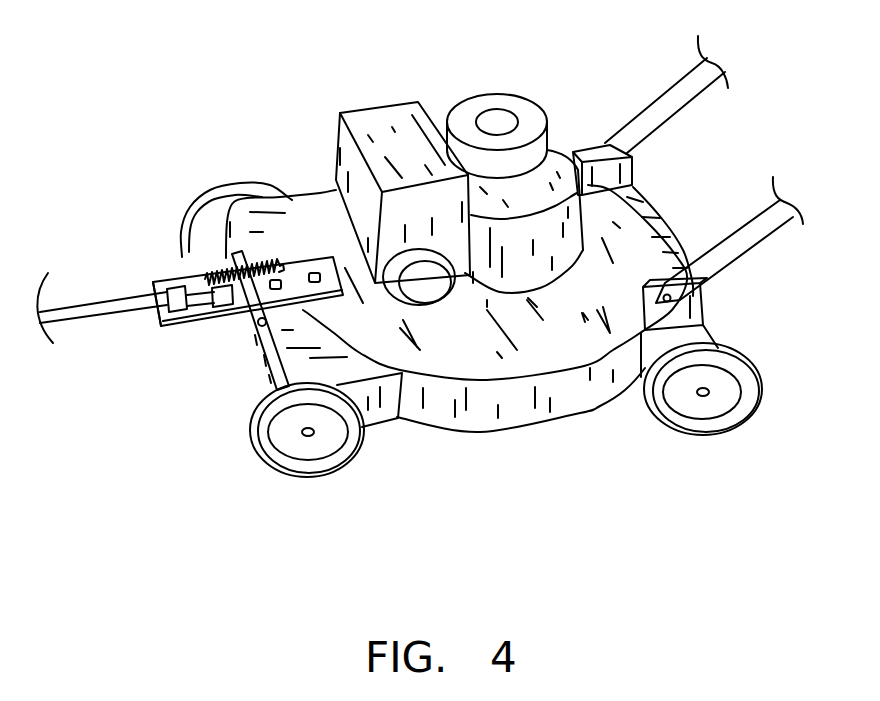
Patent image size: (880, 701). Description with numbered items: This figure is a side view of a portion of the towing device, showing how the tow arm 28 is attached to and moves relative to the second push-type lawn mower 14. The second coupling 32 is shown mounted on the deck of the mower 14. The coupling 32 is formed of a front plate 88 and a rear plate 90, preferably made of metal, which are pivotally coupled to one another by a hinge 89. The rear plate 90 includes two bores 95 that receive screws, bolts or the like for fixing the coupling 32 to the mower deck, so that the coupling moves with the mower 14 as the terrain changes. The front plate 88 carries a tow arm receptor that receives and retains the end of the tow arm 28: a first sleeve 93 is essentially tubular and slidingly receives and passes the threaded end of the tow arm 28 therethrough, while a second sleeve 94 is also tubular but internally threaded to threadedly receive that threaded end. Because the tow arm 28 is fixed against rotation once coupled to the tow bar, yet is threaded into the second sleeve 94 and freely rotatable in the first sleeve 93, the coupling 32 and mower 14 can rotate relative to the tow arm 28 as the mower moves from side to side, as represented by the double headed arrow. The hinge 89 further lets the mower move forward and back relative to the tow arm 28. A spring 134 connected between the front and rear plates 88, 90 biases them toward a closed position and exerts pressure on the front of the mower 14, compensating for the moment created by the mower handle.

The second push-type lawn mower 14 is at (375, 121).
The second coupling 32 is at (293, 226).
The tow arm 28 is at (95, 341).
The first sleeve 93 is at (155, 282).
The second sleeve 94 is at (204, 274).
The spring 134 is at (230, 268).
The bores 95 is at (315, 273).
The rear plate 90 is at (287, 298).
The front plate 88 is at (200, 318).
The hinge 89 is at (240, 325).